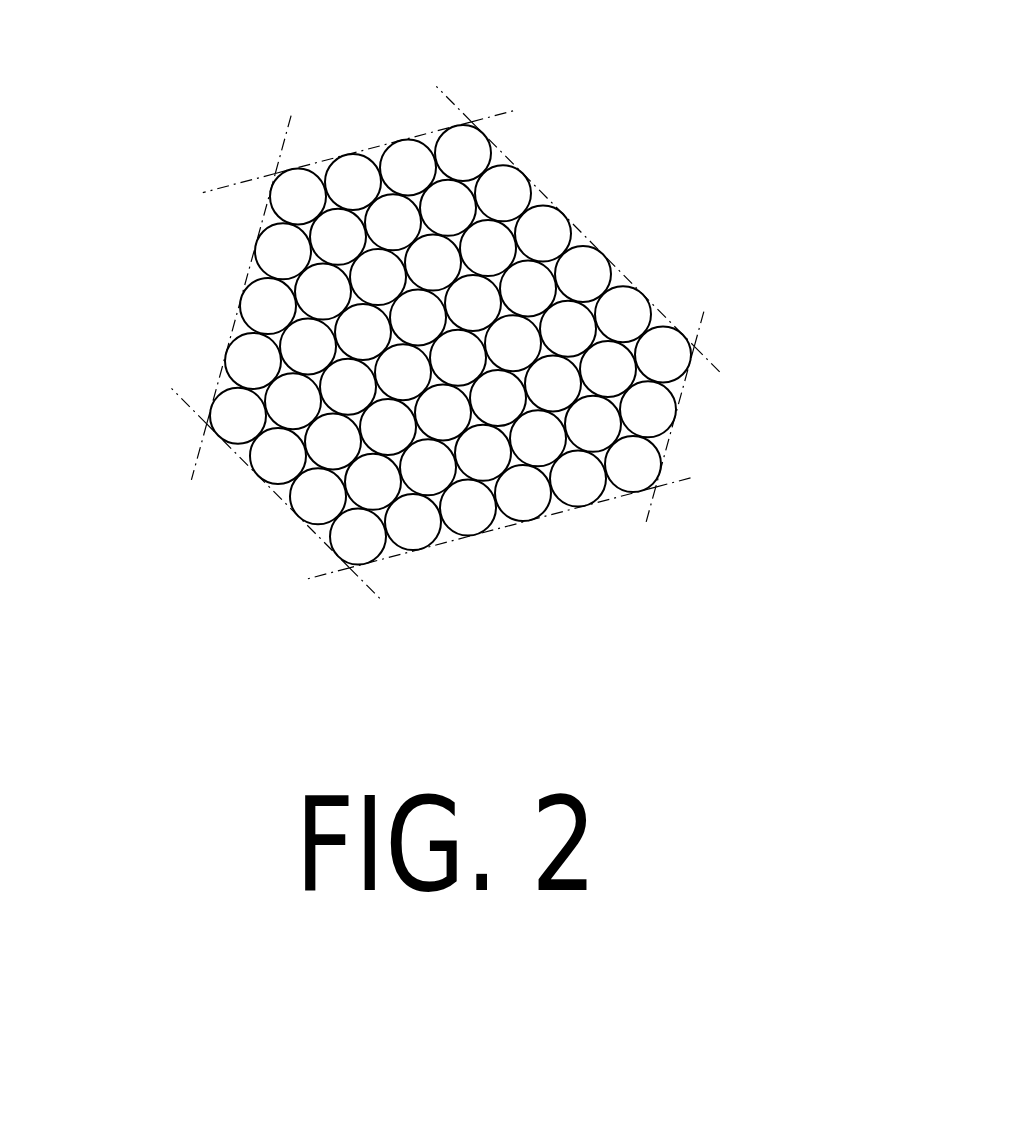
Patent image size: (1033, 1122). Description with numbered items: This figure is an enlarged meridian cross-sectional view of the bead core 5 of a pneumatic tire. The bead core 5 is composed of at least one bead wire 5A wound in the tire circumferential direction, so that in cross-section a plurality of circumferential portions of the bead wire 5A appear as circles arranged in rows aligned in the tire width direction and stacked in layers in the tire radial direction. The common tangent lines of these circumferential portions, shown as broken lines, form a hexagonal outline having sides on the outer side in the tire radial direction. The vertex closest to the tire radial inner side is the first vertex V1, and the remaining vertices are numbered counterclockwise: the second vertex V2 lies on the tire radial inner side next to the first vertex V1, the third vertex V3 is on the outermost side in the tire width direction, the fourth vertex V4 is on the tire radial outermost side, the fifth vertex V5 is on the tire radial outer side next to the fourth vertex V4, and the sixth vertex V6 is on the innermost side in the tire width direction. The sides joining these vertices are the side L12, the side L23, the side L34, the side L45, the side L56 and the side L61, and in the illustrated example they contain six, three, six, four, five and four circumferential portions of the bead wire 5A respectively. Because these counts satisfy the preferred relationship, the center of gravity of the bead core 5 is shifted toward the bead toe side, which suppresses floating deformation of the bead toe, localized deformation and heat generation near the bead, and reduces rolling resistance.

The bead core 5 is at (403, 286).
The bead wire 5A is at (270, 308).
The first vertex V1 is at (352, 568).
The second vertex V2 is at (654, 488).
The third vertex V3 is at (693, 347).
The fourth vertex V4 is at (467, 120).
The fifth vertex V5 is at (276, 174).
The sixth vertex V6 is at (208, 423).
The side formed by the first vertex and the second vertex L12 is at (492, 535).
The side formed by the second vertex and the third vertex L23 is at (665, 438).
The side formed by the third vertex and the fourth vertex L34 is at (580, 233).
The side formed by the fourth vertex and the fifth vertex L45 is at (394, 143).
The side formed by the fifth vertex and the sixth vertex L56 is at (253, 268).
The side formed by the sixth vertex and the first vertex L61 is at (278, 490).